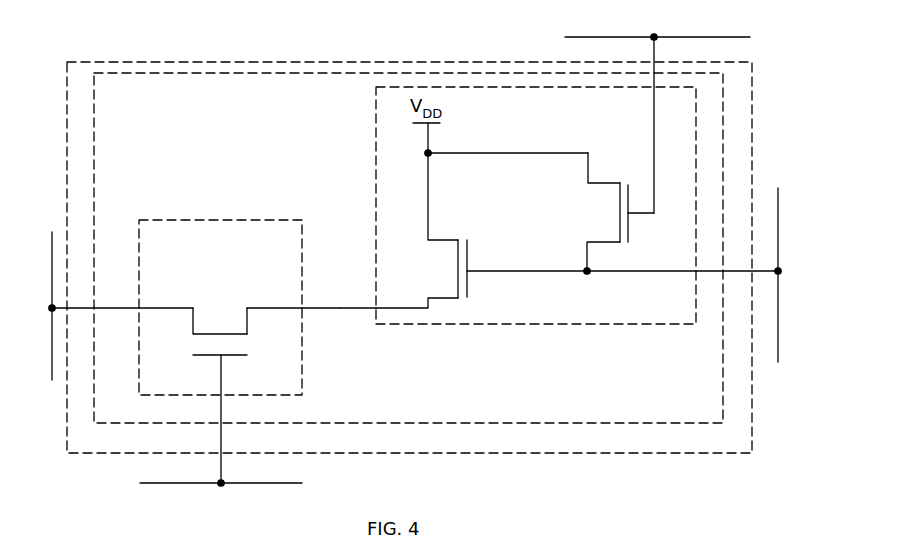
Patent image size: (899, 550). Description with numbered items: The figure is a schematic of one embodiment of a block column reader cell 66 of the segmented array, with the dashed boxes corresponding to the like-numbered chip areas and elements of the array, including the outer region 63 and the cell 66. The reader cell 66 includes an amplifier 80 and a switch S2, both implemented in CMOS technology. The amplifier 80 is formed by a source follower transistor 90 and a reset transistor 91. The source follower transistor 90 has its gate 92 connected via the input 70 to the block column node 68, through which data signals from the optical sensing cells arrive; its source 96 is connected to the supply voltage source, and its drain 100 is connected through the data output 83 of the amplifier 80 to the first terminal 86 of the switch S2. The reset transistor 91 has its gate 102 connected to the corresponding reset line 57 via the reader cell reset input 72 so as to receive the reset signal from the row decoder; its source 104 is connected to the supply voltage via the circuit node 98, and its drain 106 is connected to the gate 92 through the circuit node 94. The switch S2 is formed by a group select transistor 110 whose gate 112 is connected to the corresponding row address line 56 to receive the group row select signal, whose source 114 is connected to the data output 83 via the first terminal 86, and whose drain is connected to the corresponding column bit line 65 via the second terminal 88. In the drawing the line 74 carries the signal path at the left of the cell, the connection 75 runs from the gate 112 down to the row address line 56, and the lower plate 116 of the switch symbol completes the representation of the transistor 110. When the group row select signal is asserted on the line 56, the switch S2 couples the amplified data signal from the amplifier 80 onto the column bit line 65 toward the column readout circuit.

The row address line 56 is at (290, 485).
The reset line 57 is at (587, 37).
The pixel cell circuit 63 is at (403, 62).
The column bit line 65 is at (52, 244).
The block column reader cell 66 is at (243, 72).
The block column node 68 is at (779, 312).
The input 70 is at (722, 271).
The reader cell reset input 72 is at (655, 65).
The input signal line 74 is at (92, 305).
The capacitor ground line 75 is at (222, 396).
The amplifier 80 is at (530, 324).
The data output 83 is at (376, 308).
The first terminal 86 is at (301, 309).
The second terminal 88 is at (139, 306).
The source follower transistor 90 is at (457, 220).
The reset transistor 91 is at (611, 165).
The gate 92 is at (484, 271).
The circuit node 94 is at (587, 272).
The source 96 is at (428, 216).
The circuit node 98 is at (429, 152).
The drain 100 is at (427, 306).
The gate 102 is at (630, 222).
The source 104 is at (586, 183).
The drain 106 is at (587, 266).
The group select transistor 110 is at (239, 320).
The gate 112 is at (221, 362).
The source 114 is at (254, 308).
The switch lower plate 116 is at (193, 325).
The switch S2 is at (205, 220).